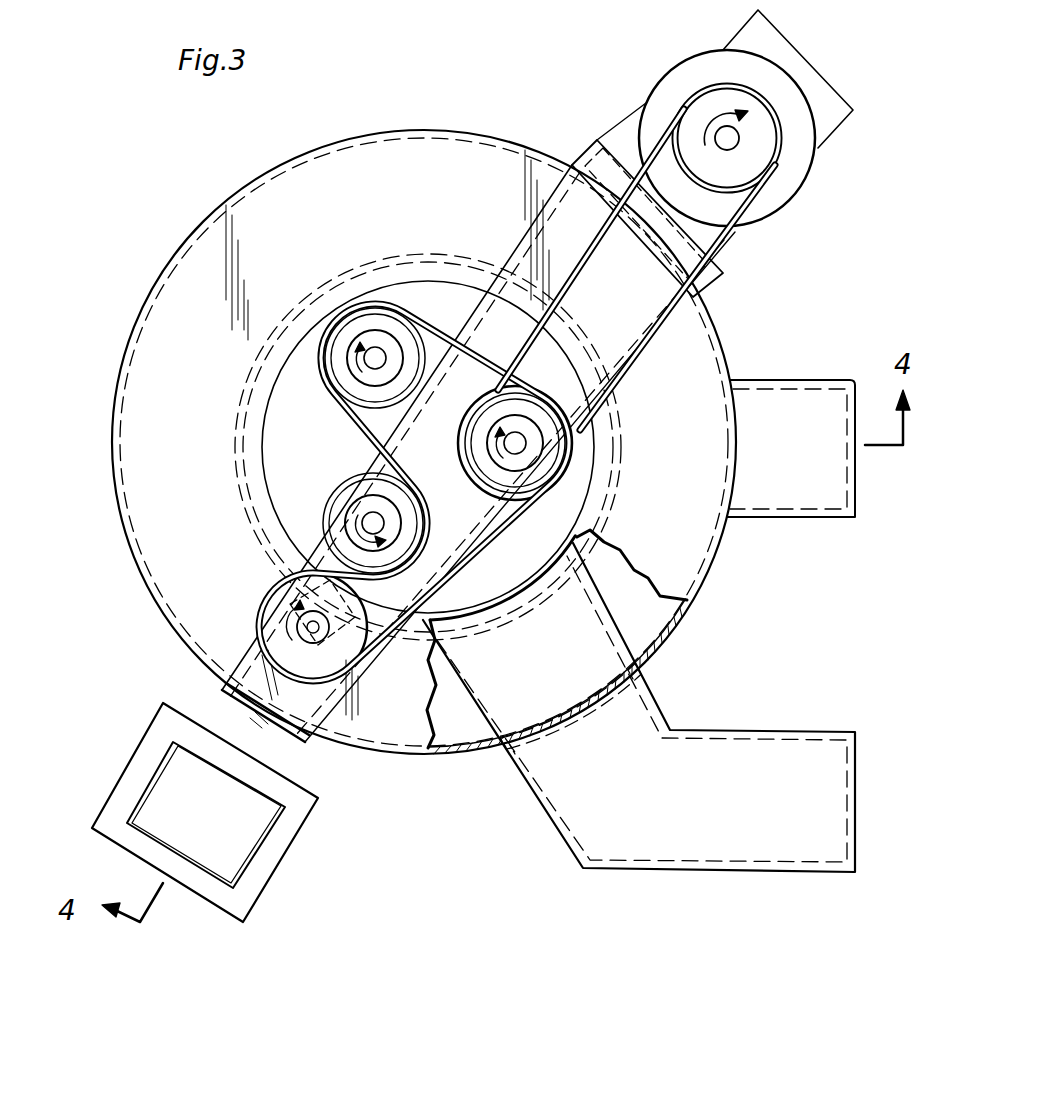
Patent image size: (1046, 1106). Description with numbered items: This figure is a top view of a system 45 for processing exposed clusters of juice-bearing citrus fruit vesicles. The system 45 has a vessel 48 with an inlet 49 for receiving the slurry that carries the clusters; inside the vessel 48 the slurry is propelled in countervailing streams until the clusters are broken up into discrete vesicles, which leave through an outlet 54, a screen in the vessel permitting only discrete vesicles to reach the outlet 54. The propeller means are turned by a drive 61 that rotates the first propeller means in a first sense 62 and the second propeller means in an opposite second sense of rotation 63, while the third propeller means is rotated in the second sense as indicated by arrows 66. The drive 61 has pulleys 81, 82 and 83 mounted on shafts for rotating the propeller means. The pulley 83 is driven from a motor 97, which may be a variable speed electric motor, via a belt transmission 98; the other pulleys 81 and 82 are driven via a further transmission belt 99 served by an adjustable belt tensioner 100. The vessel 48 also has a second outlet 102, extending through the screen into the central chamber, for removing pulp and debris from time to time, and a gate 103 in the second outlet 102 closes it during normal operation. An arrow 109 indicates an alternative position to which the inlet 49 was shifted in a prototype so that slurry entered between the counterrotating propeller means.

The vessel 48 is at (168, 262).
The system 45 is at (315, 244).
The arrow 109 is at (100, 437).
The belt transmission 98 is at (652, 327).
The inlet 49 is at (200, 828).
The second sense of rotation 63 is at (370, 352).
The pulley 82 is at (380, 330).
The first sense 62 is at (376, 523).
The pulley 81 is at (413, 532).
The arrows 66 is at (500, 466).
The pulley 83 is at (545, 478).
The adjustable belt tensioner 100 is at (350, 653).
The drive 61 is at (347, 425).
The motor 97 is at (797, 180).
The further transmission belt 99 is at (460, 356).
The outlet 54 is at (767, 523).
The second outlet 102 is at (639, 707).
The gate 103 is at (573, 735).